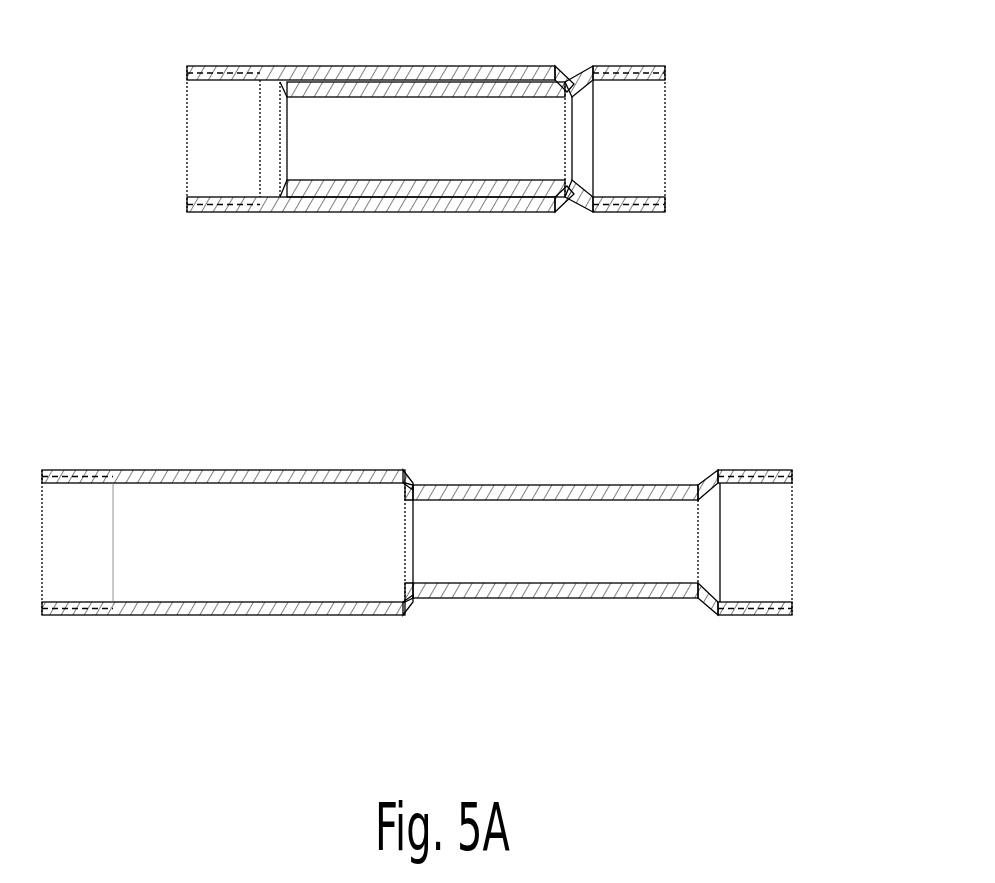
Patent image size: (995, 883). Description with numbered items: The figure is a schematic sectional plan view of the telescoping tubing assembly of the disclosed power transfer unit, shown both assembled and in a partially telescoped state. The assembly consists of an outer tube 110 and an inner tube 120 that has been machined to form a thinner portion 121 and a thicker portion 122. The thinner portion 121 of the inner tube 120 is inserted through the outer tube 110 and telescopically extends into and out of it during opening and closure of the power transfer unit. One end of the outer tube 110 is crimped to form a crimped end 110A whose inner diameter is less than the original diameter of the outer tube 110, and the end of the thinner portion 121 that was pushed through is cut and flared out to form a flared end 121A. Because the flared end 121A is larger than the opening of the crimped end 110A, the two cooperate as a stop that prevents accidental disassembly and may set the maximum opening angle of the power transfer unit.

The outer tube 110 is at (302, 318).
The crimped end 110A is at (488, 340).
The inner tube 120 is at (563, 381).
The thinner portion 121 is at (590, 571).
The flared end 121A is at (397, 607).
The thicker portion 122 is at (750, 592).